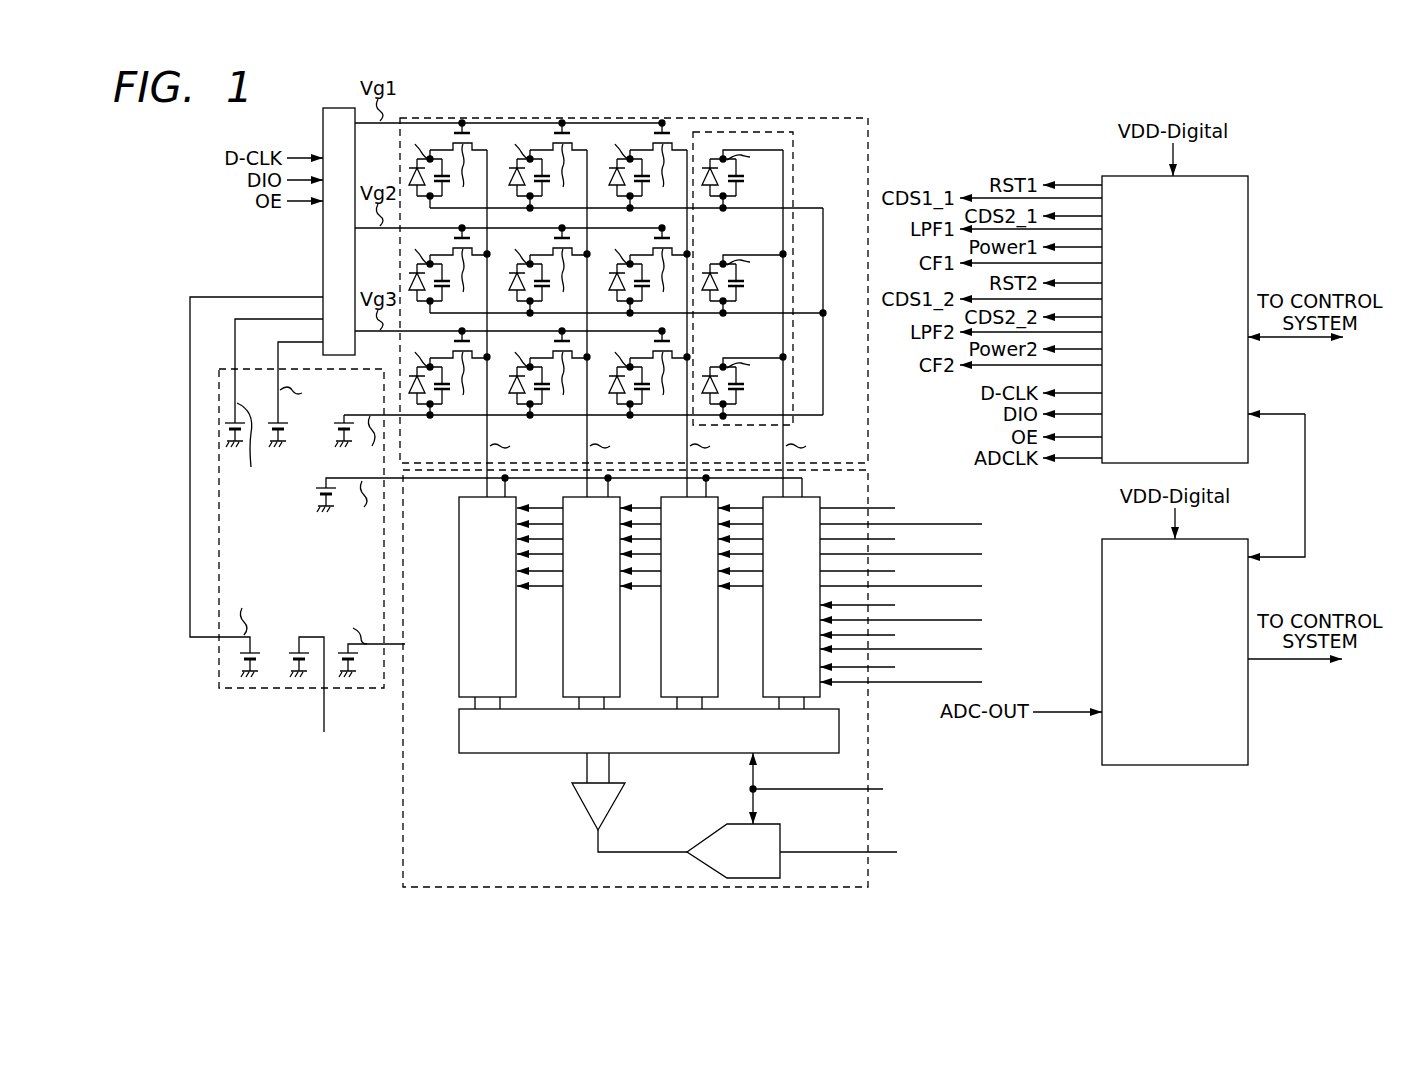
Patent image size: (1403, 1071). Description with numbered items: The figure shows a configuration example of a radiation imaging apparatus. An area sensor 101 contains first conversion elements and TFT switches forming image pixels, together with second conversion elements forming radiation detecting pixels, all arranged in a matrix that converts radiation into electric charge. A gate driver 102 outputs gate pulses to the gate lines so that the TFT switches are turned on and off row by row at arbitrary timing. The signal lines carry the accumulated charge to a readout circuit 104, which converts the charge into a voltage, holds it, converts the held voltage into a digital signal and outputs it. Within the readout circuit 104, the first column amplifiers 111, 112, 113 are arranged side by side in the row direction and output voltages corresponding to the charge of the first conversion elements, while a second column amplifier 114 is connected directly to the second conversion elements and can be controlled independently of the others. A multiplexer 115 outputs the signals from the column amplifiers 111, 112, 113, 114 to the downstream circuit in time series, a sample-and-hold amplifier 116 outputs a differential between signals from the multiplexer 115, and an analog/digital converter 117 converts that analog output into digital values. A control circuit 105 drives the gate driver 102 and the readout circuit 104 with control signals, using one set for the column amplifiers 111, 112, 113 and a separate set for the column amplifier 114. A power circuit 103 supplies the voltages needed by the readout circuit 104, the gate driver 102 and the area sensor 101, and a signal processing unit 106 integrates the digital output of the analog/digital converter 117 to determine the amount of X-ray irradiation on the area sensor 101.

The area sensor 101 is at (793, 117).
The gate driver 102 is at (321, 120).
The power circuit 103 is at (253, 690).
The readout circuit 104 is at (702, 678).
The control circuit 105 is at (1250, 212).
The signal processing unit 106 is at (1250, 733).
The column amplifier 111 is at (457, 648).
The column amplifier 112 is at (562, 645).
The column amplifier 113 is at (662, 645).
The column amplifier 114 is at (762, 645).
The multiplexer 115 is at (478, 755).
The sample-and-hold amplifier 116 is at (584, 806).
The analog/digital converter 117 is at (782, 838).